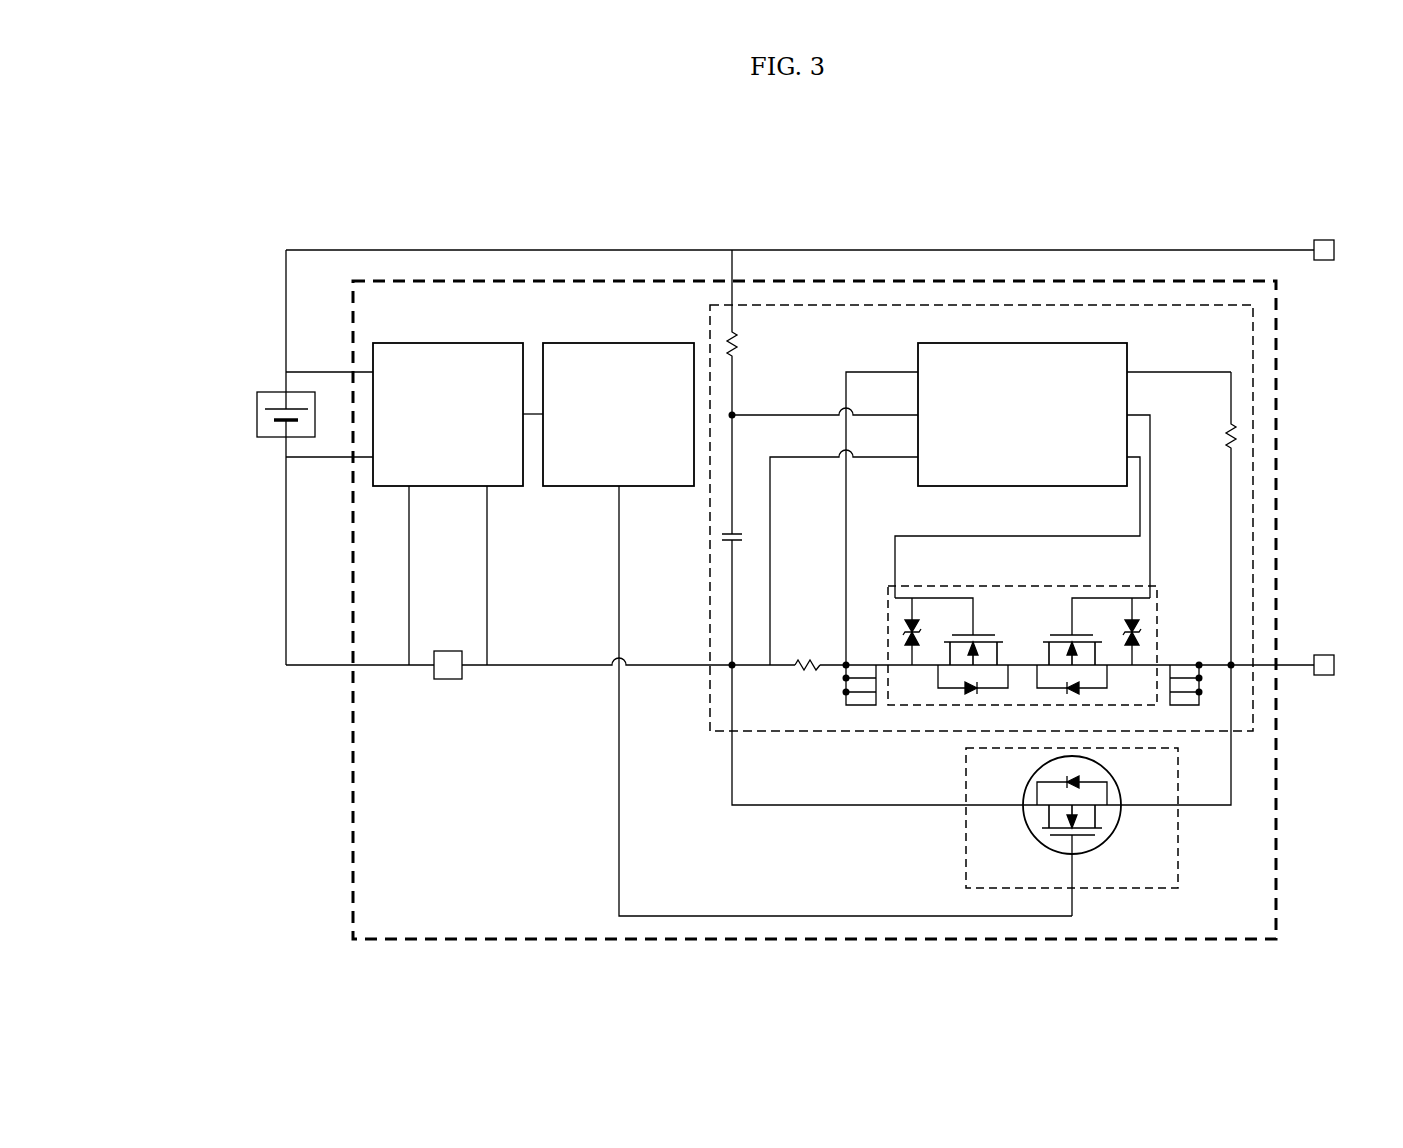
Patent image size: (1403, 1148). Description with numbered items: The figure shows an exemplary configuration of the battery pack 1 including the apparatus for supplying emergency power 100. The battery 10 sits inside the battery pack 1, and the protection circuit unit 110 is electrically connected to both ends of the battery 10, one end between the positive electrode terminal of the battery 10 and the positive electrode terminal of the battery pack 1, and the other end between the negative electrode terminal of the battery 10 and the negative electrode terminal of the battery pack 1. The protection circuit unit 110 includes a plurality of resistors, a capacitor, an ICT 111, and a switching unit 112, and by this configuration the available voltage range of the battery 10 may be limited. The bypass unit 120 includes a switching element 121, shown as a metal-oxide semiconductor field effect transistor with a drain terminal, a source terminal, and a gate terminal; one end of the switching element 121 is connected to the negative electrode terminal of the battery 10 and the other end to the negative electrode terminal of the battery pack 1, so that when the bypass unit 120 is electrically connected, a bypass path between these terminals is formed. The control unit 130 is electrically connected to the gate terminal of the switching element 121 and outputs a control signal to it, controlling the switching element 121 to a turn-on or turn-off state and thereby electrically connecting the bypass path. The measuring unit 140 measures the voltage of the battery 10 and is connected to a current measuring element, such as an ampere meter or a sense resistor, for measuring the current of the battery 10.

The battery pack 1 is at (292, 213).
The battery 10 is at (276, 392).
The apparatus for supplying emergency power 100 is at (1279, 320).
The protection circuit unit 110 is at (1253, 356).
The ICT 111 is at (1027, 343).
The switching unit 112 is at (1027, 586).
The bypass unit 120 is at (1178, 843).
The switching element 121 is at (1108, 833).
The control unit 130 is at (648, 343).
The measuring unit 140 is at (477, 343).